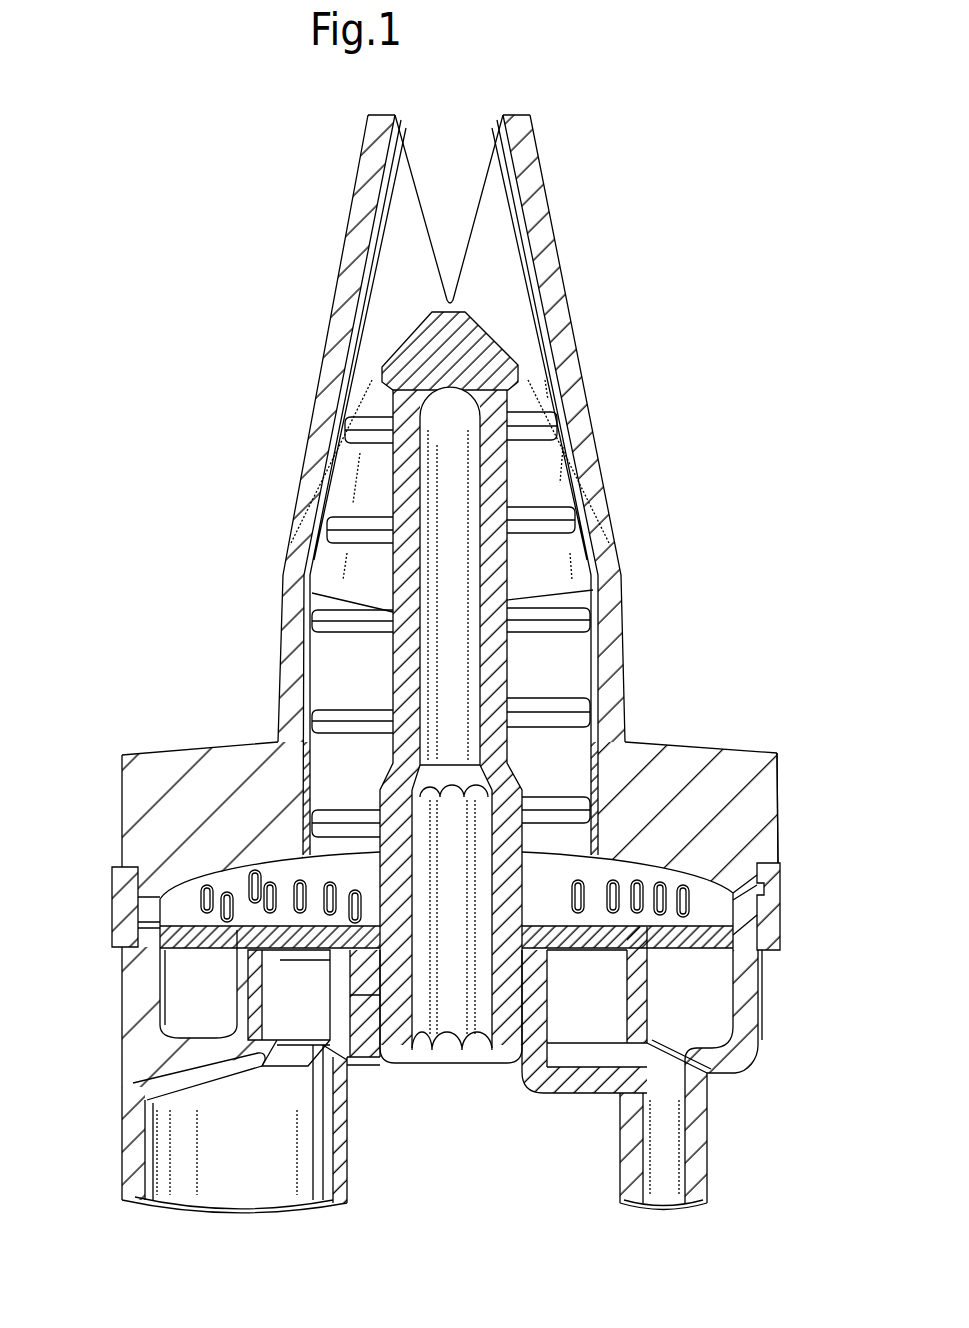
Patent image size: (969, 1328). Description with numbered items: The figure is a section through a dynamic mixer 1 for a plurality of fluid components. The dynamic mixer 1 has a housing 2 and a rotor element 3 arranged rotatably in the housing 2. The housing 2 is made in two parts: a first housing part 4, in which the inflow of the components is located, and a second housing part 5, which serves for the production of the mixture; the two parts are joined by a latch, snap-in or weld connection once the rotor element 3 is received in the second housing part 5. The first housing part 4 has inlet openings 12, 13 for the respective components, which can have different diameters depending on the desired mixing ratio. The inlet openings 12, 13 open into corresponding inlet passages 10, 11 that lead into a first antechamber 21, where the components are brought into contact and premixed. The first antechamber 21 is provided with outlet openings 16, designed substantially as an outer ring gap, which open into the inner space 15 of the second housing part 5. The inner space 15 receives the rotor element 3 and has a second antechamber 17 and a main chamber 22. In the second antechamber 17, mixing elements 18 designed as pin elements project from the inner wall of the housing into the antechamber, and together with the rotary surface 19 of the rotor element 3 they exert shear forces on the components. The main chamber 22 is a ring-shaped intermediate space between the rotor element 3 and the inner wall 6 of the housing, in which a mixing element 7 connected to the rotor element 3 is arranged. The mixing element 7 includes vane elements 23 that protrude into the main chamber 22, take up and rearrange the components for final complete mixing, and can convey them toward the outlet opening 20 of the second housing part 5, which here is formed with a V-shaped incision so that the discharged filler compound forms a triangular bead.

The dynamic mixer 1 is at (752, 560).
The housing 2 is at (636, 640).
The rotor element 3 is at (512, 322).
The first housing part 4 is at (140, 1057).
The second housing part 5 is at (122, 820).
The inner wall 6 is at (593, 555).
The mixing element 7 is at (518, 656).
The inlet passage 10 is at (263, 1142).
The inlet passage 11 is at (665, 1113).
The inlet opening 12 is at (238, 1192).
The inlet opening 13 is at (672, 1177).
The inner space 15 is at (277, 737).
The outlet openings 16 is at (160, 920).
The second antechamber 17 is at (160, 897).
The mixing elements 18 is at (738, 908).
The rotary surface 19 is at (237, 952).
The outlet opening 20 is at (452, 300).
The first antechamber 21 is at (290, 1015).
The main chamber 22 is at (345, 675).
The vane elements 23 is at (345, 423).